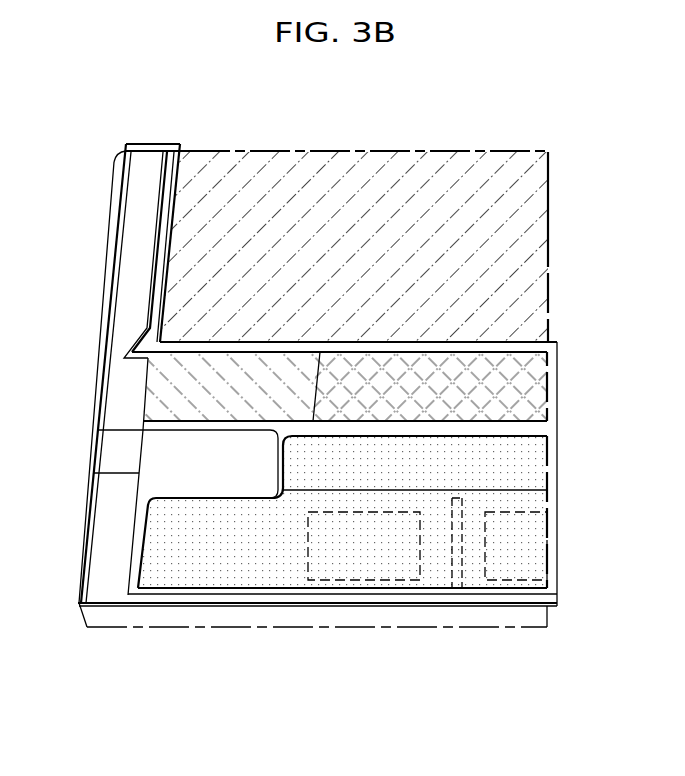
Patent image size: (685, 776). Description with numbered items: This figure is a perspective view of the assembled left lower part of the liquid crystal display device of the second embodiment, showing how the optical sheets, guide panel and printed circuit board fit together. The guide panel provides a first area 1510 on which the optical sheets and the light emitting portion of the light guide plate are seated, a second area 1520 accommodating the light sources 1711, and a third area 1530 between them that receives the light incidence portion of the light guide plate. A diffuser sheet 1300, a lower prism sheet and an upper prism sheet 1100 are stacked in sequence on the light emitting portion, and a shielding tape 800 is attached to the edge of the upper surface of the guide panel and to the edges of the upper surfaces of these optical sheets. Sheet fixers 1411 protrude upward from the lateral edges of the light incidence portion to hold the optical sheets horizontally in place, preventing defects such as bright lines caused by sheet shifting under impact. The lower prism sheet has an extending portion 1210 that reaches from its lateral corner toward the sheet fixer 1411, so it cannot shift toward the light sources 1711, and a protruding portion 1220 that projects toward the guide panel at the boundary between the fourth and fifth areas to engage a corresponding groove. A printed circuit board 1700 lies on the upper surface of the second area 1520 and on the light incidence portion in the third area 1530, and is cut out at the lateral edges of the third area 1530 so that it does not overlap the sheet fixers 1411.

The upper prism sheet 1100 is at (519, 254).
The shielding tape 800 is at (548, 342).
The diffuser sheet 1300 is at (519, 382).
The sheet fixer 1411 is at (215, 462).
The printed circuit board 1700 is at (519, 471).
The light source 1711 is at (366, 583).
The extending portion 1210 is at (223, 368).
The protruding portion 1220 is at (142, 334).
The first area 1510 is at (110, 160).
The third area 1530 is at (89, 475).
The second area 1520 is at (74, 607).